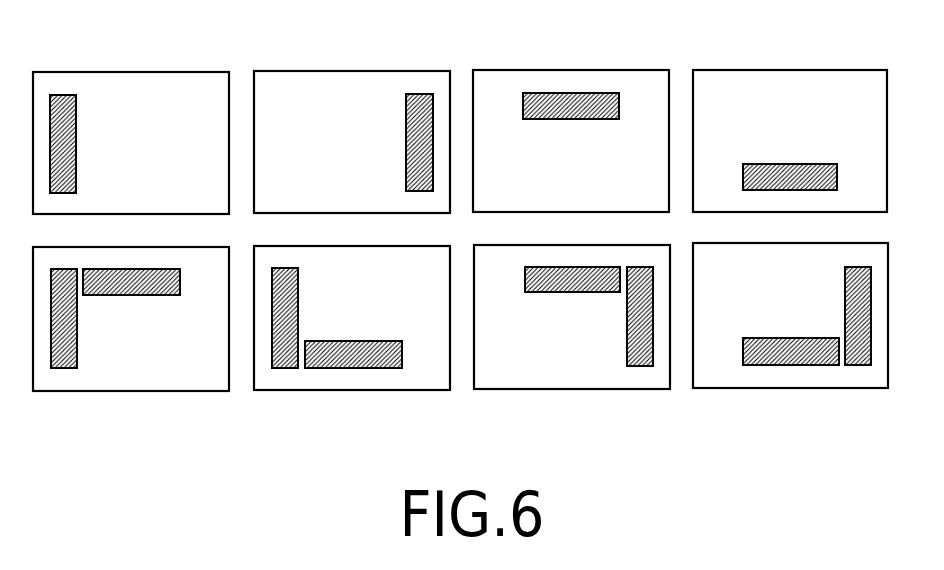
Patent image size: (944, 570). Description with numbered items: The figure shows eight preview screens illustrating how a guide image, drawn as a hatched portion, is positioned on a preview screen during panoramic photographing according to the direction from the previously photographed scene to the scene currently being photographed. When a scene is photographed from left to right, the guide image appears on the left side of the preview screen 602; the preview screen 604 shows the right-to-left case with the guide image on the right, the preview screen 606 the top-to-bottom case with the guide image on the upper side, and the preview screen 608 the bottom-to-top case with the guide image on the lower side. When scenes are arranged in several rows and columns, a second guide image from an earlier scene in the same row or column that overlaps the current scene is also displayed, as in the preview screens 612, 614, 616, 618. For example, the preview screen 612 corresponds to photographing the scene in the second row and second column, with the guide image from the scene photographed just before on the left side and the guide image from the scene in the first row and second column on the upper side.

The preview screen 602 is at (128, 72).
The preview screen 604 is at (348, 71).
The preview screen 606 is at (568, 70).
The preview screen 608 is at (787, 70).
The preview screen 612 is at (134, 391).
The preview screen 614 is at (355, 390).
The preview screen 616 is at (574, 389).
The preview screen 618 is at (793, 388).